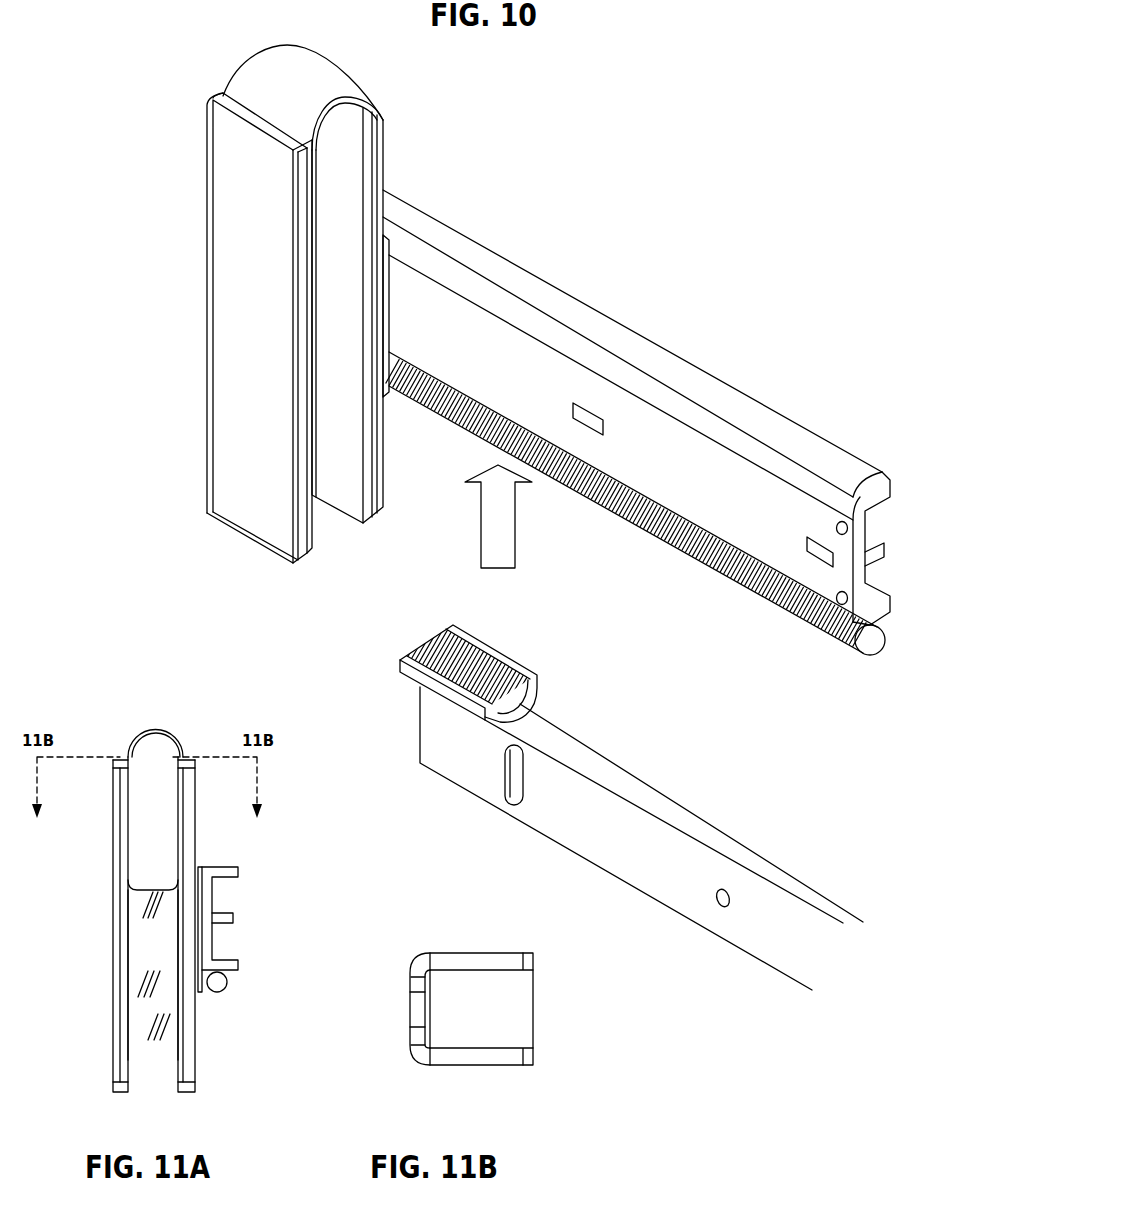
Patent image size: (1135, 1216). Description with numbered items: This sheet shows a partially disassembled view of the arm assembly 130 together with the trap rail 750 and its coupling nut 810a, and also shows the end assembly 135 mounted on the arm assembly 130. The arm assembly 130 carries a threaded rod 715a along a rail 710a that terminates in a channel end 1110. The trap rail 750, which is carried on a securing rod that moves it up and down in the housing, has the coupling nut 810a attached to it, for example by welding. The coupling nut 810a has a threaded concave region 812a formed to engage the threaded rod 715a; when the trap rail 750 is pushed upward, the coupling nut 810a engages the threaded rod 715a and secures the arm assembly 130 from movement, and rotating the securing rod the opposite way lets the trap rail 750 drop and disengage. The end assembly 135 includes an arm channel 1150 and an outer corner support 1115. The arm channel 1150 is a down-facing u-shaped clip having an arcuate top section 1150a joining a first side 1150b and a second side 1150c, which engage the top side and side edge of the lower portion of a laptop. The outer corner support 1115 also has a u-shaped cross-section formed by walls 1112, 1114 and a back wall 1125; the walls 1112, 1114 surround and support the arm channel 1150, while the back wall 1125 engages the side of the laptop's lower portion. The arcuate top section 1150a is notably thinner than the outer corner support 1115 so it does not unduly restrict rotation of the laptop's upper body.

In FIG. 10, the arm assembly 130 is at (443, 225).
In FIG. 10, the end assembly 135 is at (340, 78).
In FIG. 11A, the end assembly 135 is at (212, 670).
In FIG. 10, the rail 710a is at (643, 325).
In FIG. 11A, the rail 710a is at (230, 866).
In FIG. 10, the threaded rod 715a is at (495, 448).
In FIG. 11A, the threaded rod 715a is at (224, 990).
In FIG. 10, the trap rail 750 is at (642, 878).
In FIG. 10, the coupling nut 810a is at (520, 672).
In FIG. 10, the threaded concave region 812a is at (432, 640).
In FIG. 10, the channel rib 1110 is at (886, 546).
In FIG. 11A, the channel rib 1110 is at (234, 913).
In FIG. 10, the wall 1112 is at (228, 165).
In FIG. 11A, the wall 1112 is at (112, 810).
In FIG. 11B, the wall 1112 is at (486, 1060).
In FIG. 10, the wall 1114 is at (384, 138).
In FIG. 11A, the wall 1114 is at (192, 812).
In FIG. 11B, the wall 1114 is at (474, 960).
In FIG. 11A, the outer corner support 1115 is at (115, 745).
In FIG. 11B, the outer corner support 1115 is at (438, 940).
In FIG. 11A, the back wall 1125 is at (173, 953).
In FIG. 11B, the back wall 1125 is at (410, 1015).
In FIG. 10, the arm channel 1150 is at (290, 66).
In FIG. 11A, the arm channel 1150 is at (150, 730).
In FIG. 11A, the arcuate top section 1150a is at (166, 740).
In FIG. 11A, the first side 1150b is at (129, 988).
In FIG. 11A, the second side 1150c is at (182, 1055).